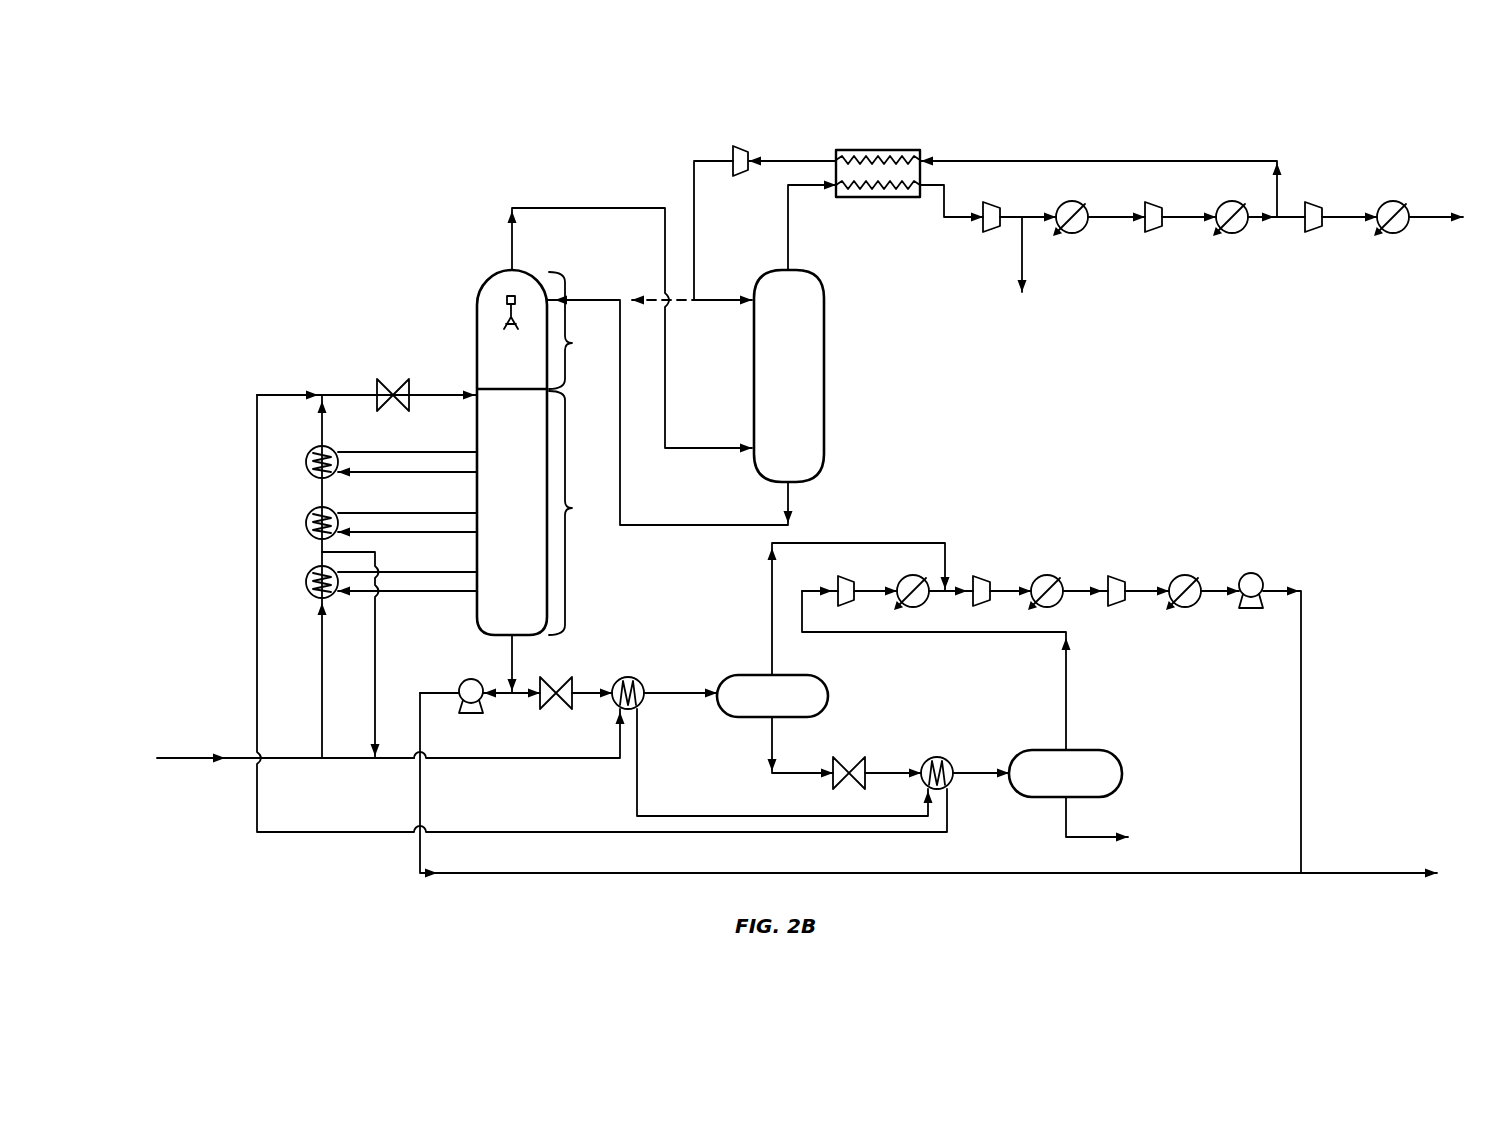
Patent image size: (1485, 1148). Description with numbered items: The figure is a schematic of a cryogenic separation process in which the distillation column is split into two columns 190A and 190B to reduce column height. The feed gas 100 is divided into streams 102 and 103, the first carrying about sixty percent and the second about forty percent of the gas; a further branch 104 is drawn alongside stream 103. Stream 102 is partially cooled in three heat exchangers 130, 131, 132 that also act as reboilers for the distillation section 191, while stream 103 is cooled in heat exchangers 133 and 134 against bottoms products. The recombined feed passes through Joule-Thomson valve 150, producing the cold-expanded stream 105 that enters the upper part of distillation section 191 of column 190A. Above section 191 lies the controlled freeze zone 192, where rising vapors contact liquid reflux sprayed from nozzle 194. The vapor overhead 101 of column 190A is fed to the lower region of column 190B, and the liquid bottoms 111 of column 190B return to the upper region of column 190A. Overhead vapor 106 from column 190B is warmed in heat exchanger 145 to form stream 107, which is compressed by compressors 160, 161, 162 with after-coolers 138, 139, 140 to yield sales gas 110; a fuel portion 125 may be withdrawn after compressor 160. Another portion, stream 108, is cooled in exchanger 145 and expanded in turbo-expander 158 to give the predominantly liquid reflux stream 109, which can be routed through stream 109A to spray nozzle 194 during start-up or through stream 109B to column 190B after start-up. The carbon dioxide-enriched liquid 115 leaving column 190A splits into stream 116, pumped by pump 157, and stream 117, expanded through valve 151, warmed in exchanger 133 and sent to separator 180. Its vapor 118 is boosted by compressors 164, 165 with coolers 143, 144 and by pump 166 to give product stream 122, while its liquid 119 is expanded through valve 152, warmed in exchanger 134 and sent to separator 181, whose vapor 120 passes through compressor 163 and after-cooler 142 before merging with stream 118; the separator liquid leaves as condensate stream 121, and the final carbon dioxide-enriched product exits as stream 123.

The feed gas stream 100 is at (187, 760).
The vapor overhead stream 101 is at (556, 208).
The first feed stream 102 is at (322, 686).
The second feed stream 103 is at (343, 760).
The feed stream 104 is at (375, 646).
The cold-expanded stream 105 is at (430, 395).
The overhead vapor stream 106 is at (788, 226).
The warmed residue vapor stream 107 is at (944, 210).
The recycle stream 108 is at (1018, 160).
The expanded reflux stream 109 is at (694, 205).
The start-up reflux stream 109A is at (650, 300).
The upper-section reflux stream 109B is at (720, 300).
The sales gas stream 110 is at (1432, 216).
The liquid bottoms stream 111 is at (690, 527).
The CO2-enriched liquid product stream 115 is at (511, 668).
The first bottoms portion 116 is at (500, 705).
The second bottoms portion 117 is at (522, 705).
The separator vapor stream 118 is at (772, 662).
The separator liquid stream 119 is at (772, 752).
The second separator vapor stream 120 is at (1066, 674).
The condensate stream 121 is at (1066, 830).
The product stream 122 is at (1301, 726).
The CO2 enriched product stream 123 is at (1340, 876).
The fuel stream 125 is at (1022, 262).
The heat exchanger 130 is at (310, 570).
The heat exchanger 131 is at (310, 510).
The heat exchanger 132 is at (310, 450).
The heat exchanger 133 is at (618, 678).
The heat exchanger 134 is at (927, 760).
The after-cooler 138 is at (1062, 201).
The after-cooler 139 is at (1220, 201).
The after-cooler 140 is at (1385, 201).
The after-cooler 142 is at (921, 578).
The cooler 143 is at (1040, 578).
The cooler 144 is at (1178, 578).
The heat exchanger 145 is at (860, 150).
The Joule-Thomson valve 150 is at (384, 380).
The expansion valve 151 is at (568, 680).
The expansion valve 152 is at (851, 758).
The pump 157 is at (460, 683).
The turbo-expander 158 is at (740, 146).
The compressor 160 is at (991, 203).
The compressor 161 is at (1153, 203).
The compressor 162 is at (1313, 203).
The compressor 163 is at (849, 578).
The compressor 164 is at (982, 578).
The compressor 165 is at (1120, 578).
The pump 166 is at (1251, 573).
The separator 180 is at (791, 675).
The separator 181 is at (1085, 750).
The distillation column 190A is at (477, 300).
The distillation column 190B is at (824, 352).
The distillation section 191 is at (580, 513).
The controlled freeze zone 192 is at (580, 330).
The spray nozzle 194 is at (500, 326).